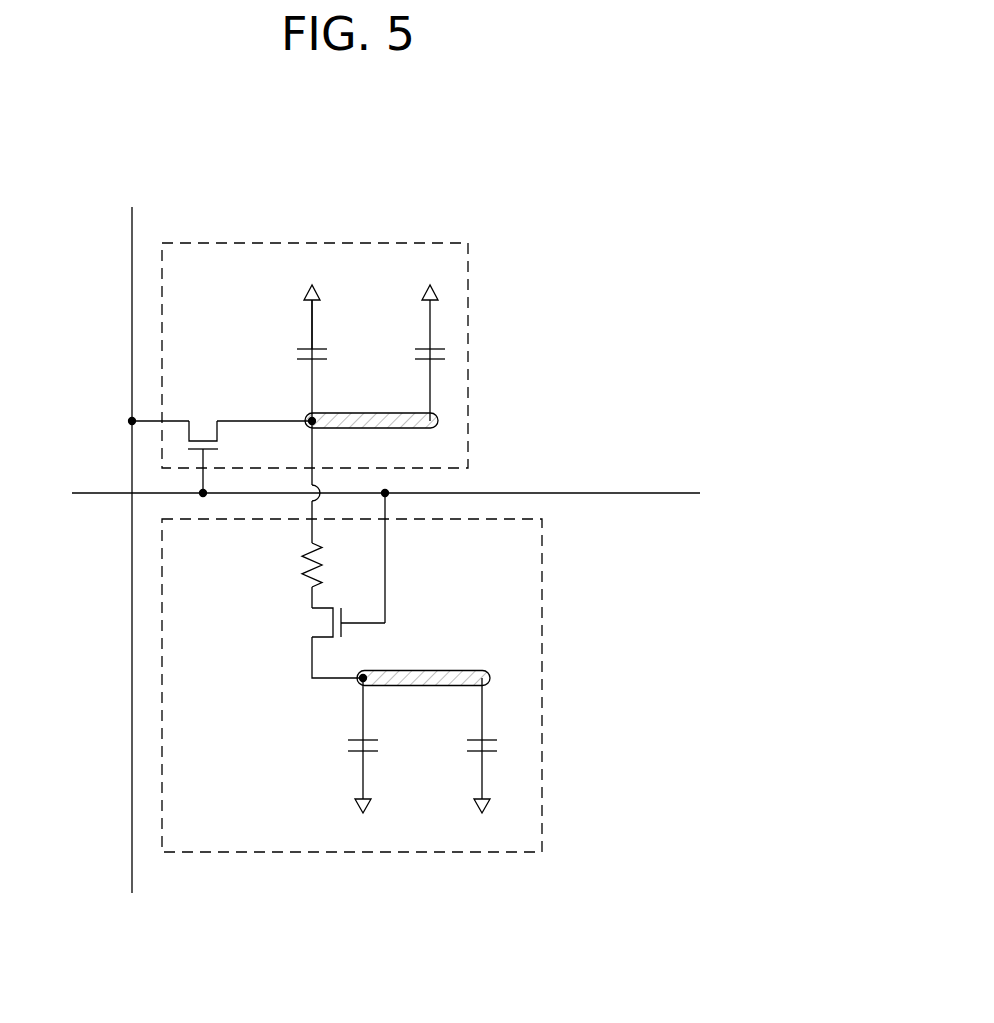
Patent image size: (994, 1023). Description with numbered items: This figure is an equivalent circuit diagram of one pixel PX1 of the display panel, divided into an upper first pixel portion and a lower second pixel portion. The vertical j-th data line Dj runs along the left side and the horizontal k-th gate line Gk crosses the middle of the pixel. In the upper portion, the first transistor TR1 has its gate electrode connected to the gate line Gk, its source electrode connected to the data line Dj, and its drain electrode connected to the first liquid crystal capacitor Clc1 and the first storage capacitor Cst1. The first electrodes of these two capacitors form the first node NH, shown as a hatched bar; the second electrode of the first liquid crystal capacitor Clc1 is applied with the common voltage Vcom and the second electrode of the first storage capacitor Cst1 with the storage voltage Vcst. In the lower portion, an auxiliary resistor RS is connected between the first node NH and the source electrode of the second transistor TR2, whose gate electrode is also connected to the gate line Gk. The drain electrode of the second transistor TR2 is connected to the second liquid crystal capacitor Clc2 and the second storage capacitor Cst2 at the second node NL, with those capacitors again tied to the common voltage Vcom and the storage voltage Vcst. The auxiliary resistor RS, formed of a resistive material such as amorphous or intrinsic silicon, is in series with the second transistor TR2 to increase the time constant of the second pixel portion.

The j-th data line Dj is at (132, 535).
The k-th gate line Gk is at (369, 493).
The pixel PX1 is at (402, 482).
The first transistor TR1 is at (221, 432).
The second transistor TR2 is at (347, 634).
The first node NH is at (371, 434).
The second node NL is at (423, 693).
The auxiliary resistor RS is at (296, 565).
The first liquid crystal capacitor Clc1 is at (288, 333).
The first storage capacitor Cst1 is at (404, 355).
The second liquid crystal capacitor Clc2 is at (338, 747).
The second storage capacitor Cst2 is at (457, 747).
The common voltage Vcom is at (337, 551).
The storage voltage Vcst is at (456, 551).